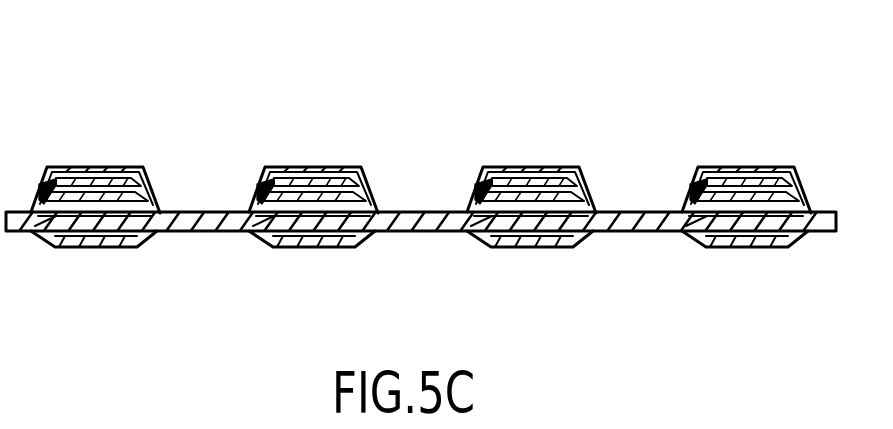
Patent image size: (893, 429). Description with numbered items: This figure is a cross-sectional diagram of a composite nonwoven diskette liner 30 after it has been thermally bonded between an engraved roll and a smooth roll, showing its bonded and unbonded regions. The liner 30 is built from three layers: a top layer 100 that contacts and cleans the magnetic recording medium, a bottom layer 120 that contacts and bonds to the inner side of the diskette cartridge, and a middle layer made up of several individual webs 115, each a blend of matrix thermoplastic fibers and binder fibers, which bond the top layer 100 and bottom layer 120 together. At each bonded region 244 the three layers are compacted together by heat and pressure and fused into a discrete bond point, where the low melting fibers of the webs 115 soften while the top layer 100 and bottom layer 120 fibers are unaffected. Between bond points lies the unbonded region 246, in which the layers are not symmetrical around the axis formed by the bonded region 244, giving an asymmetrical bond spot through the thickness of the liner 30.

The liner 30 is at (421, 165).
The bonded region 244 is at (197, 213).
The unbonded region 246 is at (338, 166).
The top layer 100 is at (569, 207).
The individual webs 115 is at (529, 254).
The bottom layer 120 is at (569, 279).